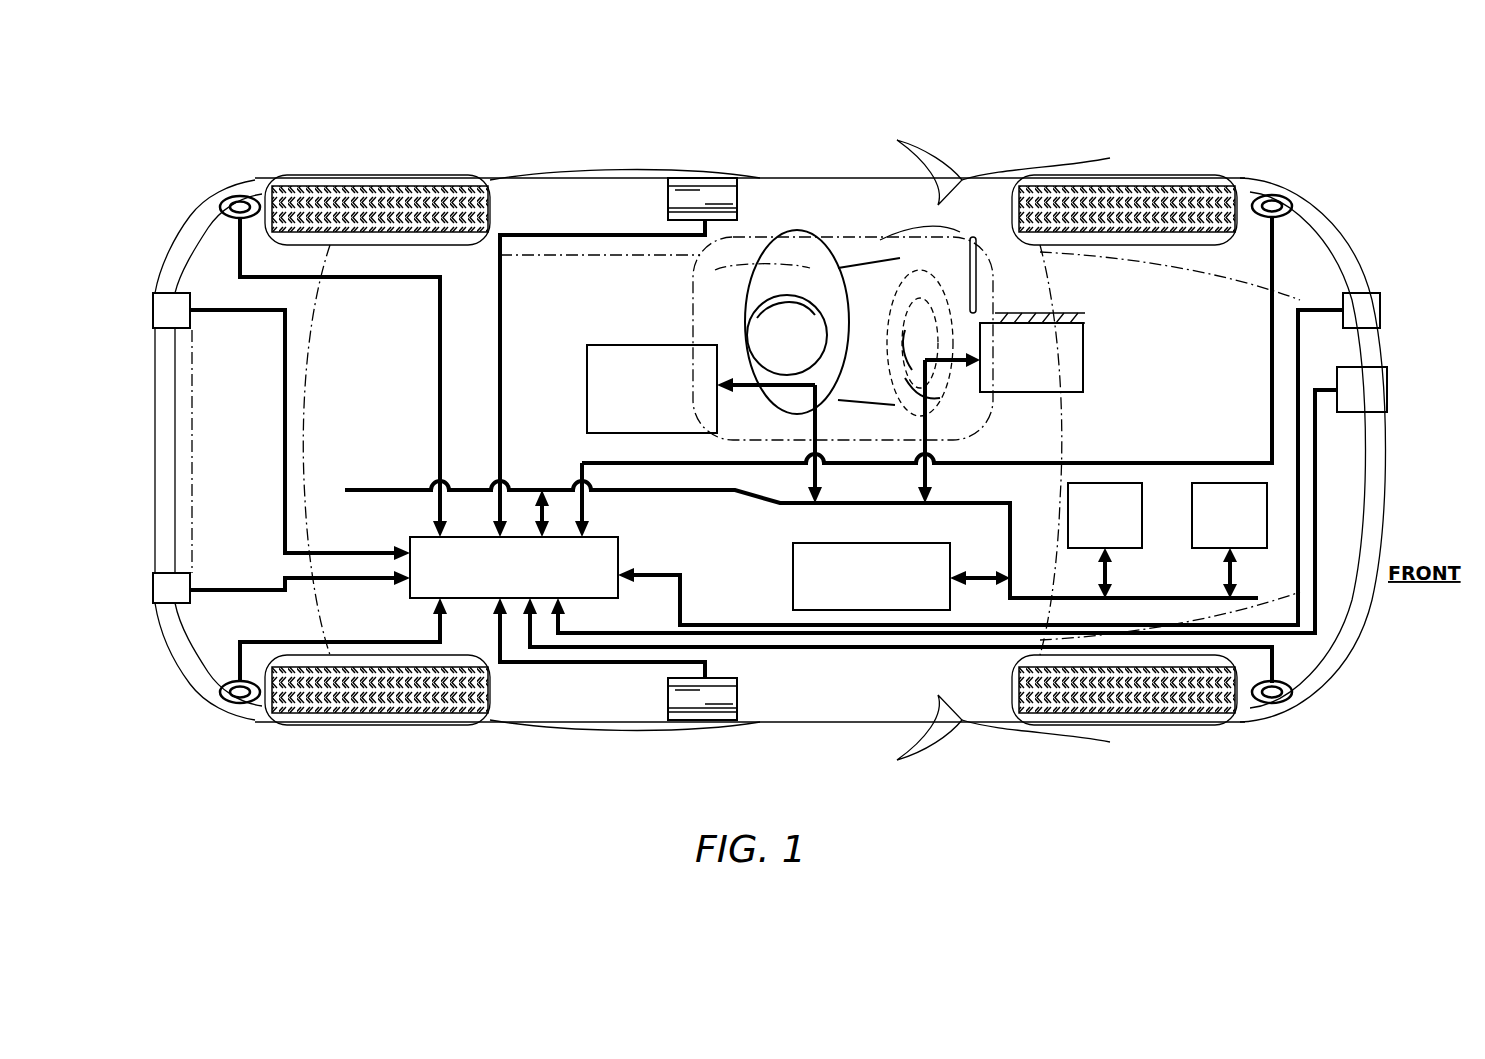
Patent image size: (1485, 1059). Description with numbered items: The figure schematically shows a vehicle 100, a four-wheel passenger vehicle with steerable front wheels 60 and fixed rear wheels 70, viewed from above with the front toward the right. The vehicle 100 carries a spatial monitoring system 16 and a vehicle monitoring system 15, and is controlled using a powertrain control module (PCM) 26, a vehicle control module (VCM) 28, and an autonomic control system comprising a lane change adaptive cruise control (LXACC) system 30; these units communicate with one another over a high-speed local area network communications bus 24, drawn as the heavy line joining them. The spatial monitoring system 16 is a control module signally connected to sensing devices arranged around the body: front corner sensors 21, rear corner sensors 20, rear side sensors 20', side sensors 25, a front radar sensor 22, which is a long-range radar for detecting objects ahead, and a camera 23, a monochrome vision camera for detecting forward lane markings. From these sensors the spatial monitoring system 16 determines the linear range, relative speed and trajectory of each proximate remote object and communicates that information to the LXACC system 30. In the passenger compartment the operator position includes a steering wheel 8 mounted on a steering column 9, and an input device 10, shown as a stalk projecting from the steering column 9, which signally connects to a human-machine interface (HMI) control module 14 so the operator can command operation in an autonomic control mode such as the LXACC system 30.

The vehicle 100 is at (1110, 152).
The steering wheel 8 is at (955, 392).
The steering column 9 is at (996, 313).
The input device 10 is at (976, 282).
The human-machine interface (HMI) control module 14 is at (1080, 352).
The vehicle monitoring system 15 is at (652, 389).
The spatial monitoring system 16 is at (514, 567).
The rear corner sensors 20 is at (218, 455).
The rear side sensors 20' is at (159, 448).
The front corner sensors 21 is at (1272, 194).
The front radar sensor 22 is at (1362, 389).
The camera 23 is at (1365, 298).
The communications bus 24 is at (1150, 596).
The side sensors 25 is at (700, 190).
The powertrain control module (PCM) 26 is at (1105, 515).
The vehicle control module (VCM) 28 is at (1229, 515).
The lane change adaptive cruise control (LXACC) system 30 is at (871, 576).
The front wheels 60 is at (1180, 185).
The rear wheels 70 is at (300, 185).